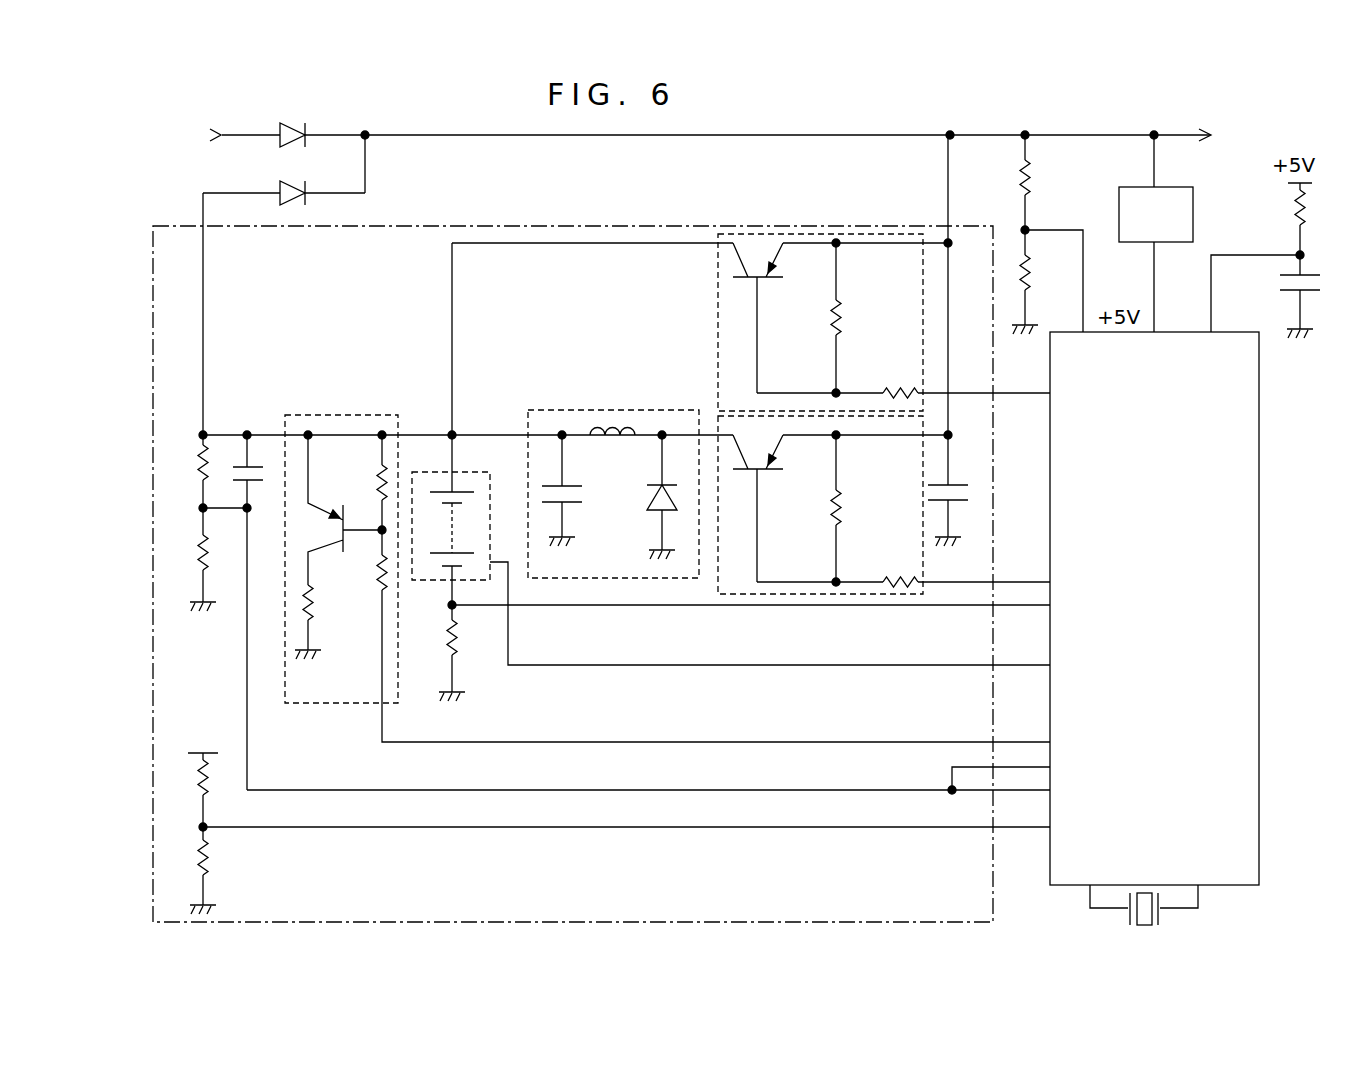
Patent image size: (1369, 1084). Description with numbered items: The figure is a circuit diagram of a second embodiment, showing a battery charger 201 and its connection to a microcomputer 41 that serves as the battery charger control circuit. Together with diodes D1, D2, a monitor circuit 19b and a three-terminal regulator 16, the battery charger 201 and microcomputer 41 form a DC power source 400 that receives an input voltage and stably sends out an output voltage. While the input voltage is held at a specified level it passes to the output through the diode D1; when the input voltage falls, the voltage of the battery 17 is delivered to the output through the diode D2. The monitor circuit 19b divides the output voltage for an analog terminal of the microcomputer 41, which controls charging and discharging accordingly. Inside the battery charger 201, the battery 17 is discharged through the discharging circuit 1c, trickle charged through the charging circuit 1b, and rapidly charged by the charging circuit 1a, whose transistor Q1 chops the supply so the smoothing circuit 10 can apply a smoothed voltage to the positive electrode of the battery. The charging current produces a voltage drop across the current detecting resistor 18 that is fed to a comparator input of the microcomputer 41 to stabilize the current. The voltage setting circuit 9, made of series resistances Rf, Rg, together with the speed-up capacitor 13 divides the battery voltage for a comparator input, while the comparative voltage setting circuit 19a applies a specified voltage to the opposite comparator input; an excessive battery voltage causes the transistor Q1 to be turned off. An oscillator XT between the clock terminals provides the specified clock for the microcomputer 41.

The DC power source 400 is at (912, 125).
The battery charger 201 is at (372, 227).
The charging circuit 1a is at (884, 534).
The charging circuit 1b is at (812, 233).
The discharging circuit 1c is at (362, 415).
The voltage setting circuit 9 is at (196, 492).
The smoothing circuit 10 is at (638, 410).
The speed-up capacitor 13 is at (263, 462).
The three-terminal regulator 16 is at (1183, 228).
The battery 17 is at (472, 470).
The current detecting resistor 18 is at (460, 640).
The comparative voltage setting circuit 19a is at (310, 882).
The monitor circuit 19b is at (1108, 193).
The microcomputer 41 is at (1200, 495).
The transistor Q1 is at (815, 516).
The diode D1 is at (275, 140).
The diode D2 is at (332, 177).
The resistance Rf is at (213, 462).
The resistance Rg is at (213, 543).
The oscillator XT is at (1120, 918).